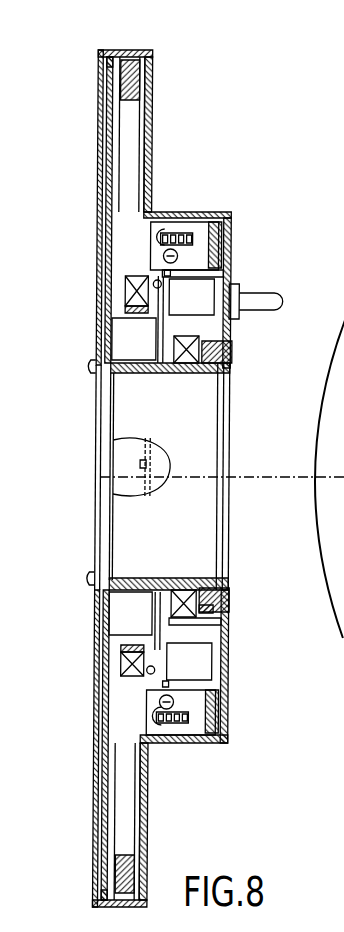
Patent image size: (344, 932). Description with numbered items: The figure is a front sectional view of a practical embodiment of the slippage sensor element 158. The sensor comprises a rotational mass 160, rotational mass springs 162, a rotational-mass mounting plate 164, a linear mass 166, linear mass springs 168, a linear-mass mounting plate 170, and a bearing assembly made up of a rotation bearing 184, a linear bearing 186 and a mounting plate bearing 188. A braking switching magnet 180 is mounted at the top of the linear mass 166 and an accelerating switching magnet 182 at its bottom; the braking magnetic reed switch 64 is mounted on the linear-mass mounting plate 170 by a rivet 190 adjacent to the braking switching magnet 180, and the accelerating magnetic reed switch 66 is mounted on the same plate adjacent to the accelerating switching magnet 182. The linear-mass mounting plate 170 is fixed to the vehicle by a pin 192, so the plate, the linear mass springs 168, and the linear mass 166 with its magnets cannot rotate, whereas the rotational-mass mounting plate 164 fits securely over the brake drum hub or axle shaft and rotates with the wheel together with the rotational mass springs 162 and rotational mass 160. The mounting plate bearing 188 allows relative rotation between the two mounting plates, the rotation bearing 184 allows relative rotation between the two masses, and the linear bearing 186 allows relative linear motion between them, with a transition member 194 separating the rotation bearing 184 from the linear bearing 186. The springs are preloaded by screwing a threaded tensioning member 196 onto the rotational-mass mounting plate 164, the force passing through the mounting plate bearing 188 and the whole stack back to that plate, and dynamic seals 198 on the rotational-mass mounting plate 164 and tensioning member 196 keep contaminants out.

The braking magnetic reed switch 64 is at (170, 212).
The accelerating magnetic reed switch 66 is at (163, 744).
The slippage sensor element 158 is at (160, 96).
The rotational mass 160 is at (131, 60).
The rotational mass springs 162 is at (117, 452).
The rotational-mass mounting plate 164 is at (153, 378).
The linear mass 166 is at (222, 273).
The linear mass springs 168 is at (191, 479).
The linear-mass mounting plate 170 is at (153, 63).
The braking switching magnet 180 is at (228, 262).
The accelerating switching magnet 182 is at (173, 685).
The rotation bearing 184 is at (125, 288).
The linear bearing 186 is at (150, 240).
The mounting plate bearing 188 is at (202, 373).
The rivet 190 is at (227, 250).
The pin 192 is at (280, 292).
The transition member 194 is at (165, 272).
The threaded tensioning member 196 is at (226, 356).
The dynamic seals 198 is at (98, 63).